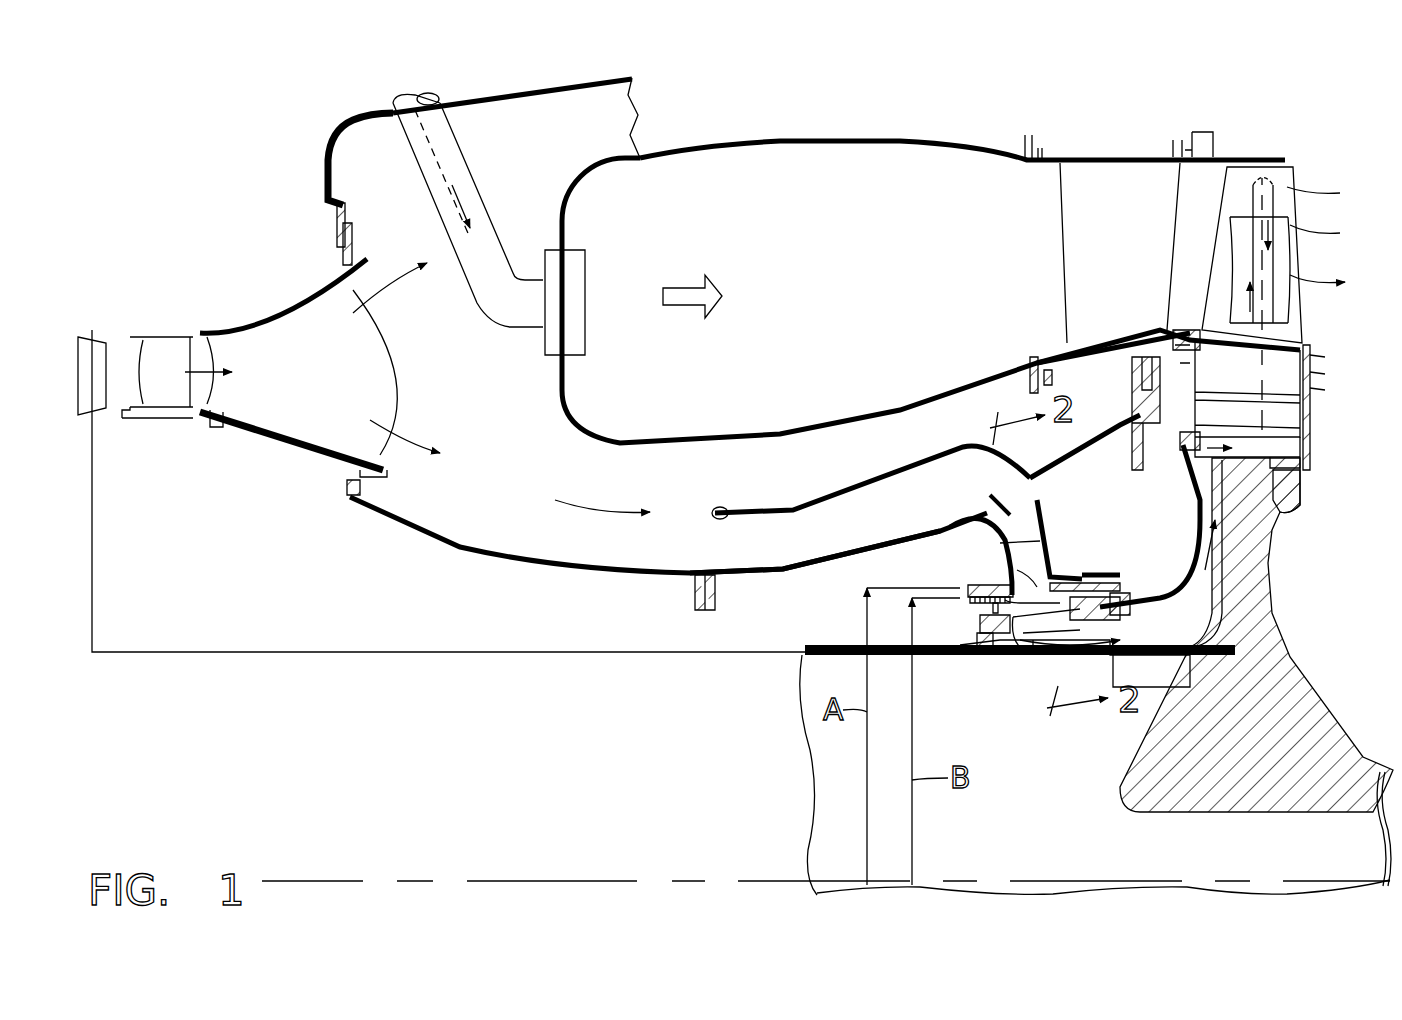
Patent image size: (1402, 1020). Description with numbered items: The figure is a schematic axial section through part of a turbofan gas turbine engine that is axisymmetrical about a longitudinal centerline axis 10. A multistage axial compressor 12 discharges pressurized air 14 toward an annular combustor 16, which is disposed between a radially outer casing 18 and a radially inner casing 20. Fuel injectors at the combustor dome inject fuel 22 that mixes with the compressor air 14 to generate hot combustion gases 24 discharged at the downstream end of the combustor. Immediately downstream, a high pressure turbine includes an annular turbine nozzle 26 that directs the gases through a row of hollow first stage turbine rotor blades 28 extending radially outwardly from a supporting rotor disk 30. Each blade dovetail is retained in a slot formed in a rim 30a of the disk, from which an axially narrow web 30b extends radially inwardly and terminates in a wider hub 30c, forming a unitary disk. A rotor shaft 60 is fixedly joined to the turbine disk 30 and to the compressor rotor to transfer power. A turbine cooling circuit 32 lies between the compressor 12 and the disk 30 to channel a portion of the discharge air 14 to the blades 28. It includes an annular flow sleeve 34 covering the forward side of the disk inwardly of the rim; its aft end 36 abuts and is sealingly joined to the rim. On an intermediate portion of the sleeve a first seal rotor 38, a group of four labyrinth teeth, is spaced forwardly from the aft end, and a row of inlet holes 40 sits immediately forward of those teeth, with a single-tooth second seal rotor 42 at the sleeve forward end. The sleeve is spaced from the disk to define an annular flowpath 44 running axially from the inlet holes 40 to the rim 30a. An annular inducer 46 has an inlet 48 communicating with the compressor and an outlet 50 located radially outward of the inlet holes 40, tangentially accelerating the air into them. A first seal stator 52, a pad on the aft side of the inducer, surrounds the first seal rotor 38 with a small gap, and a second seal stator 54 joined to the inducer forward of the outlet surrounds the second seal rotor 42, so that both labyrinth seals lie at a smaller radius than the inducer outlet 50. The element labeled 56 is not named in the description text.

The longitudinal or axial centerline axis 10 is at (625, 870).
The multistage axial compressor 12 is at (92, 330).
The pressurized air 14 is at (200, 365).
The annular combustor 16 is at (715, 376).
The radially outer casing 18 is at (475, 95).
The radially inner casing 20 is at (672, 565).
The fuel 22 is at (415, 98).
The hot combustion gases 24 is at (692, 285).
The annular turbine nozzle 26 is at (1140, 261).
The first stage turbine rotor blades 28 is at (1290, 172).
The rotor disk 30 is at (1259, 624).
The rim 30a is at (1280, 455).
The web 30b is at (1248, 568).
The hub 30c is at (1275, 764).
The turbine cooling circuit 32 is at (1040, 680).
The annular flow sleeve 34 is at (1195, 528).
The aft end 36 is at (1183, 455).
The first seal member or rotor 38 is at (1110, 578).
The inlet holes 40 is at (1030, 630).
The second seal member or rotor 42 is at (980, 625).
The annular flowpath 44 is at (1205, 631).
The annular inducer 46 is at (1055, 530).
The inlet 48 is at (1020, 485).
The outlet 50 is at (1027, 583).
The first seal stator 52 is at (1125, 592).
The second seal stator 54 is at (972, 590).
The nozzle inner band 56 is at (1030, 558).
The rotor shaft 60 is at (858, 645).